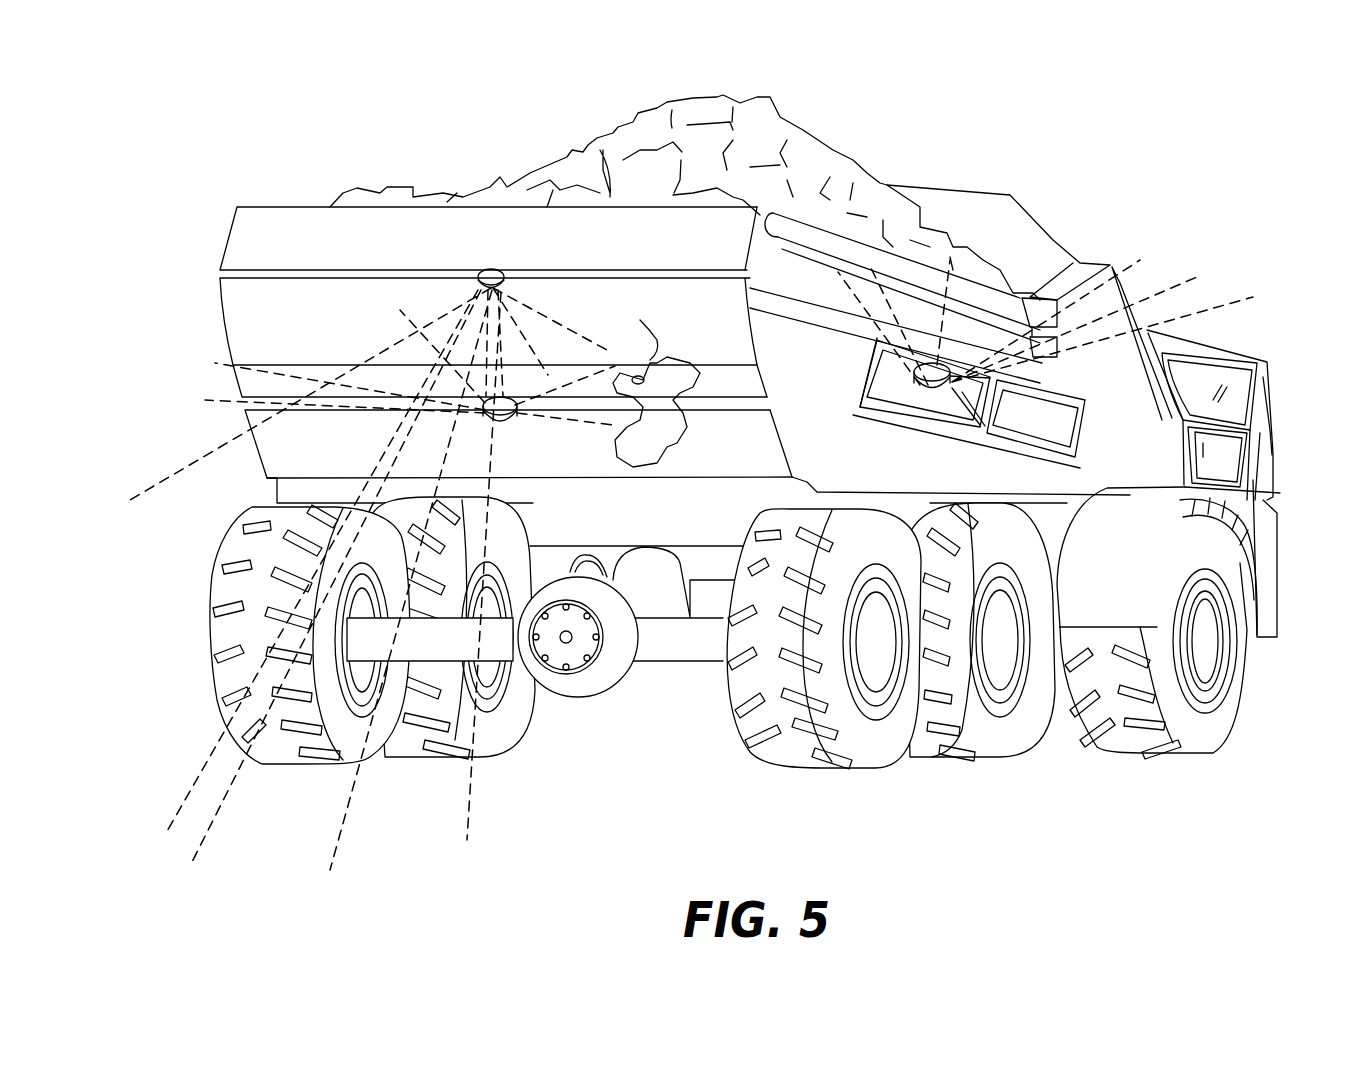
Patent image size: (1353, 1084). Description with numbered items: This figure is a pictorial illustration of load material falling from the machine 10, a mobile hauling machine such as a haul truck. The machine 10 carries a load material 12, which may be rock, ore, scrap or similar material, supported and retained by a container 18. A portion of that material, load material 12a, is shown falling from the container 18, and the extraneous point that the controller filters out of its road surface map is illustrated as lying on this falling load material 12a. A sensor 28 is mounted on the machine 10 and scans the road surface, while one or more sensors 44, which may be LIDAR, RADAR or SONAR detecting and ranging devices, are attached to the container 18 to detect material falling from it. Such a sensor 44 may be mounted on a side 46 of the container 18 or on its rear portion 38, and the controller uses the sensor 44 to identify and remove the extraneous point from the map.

The machine 10 is at (1164, 240).
The load material 12 is at (782, 117).
The load material 12a is at (610, 457).
The container 18 is at (243, 208).
The sensor 28 is at (487, 270).
The rear portion 38 is at (250, 780).
The sensor 44 is at (508, 426).
The side 46 is at (845, 780).